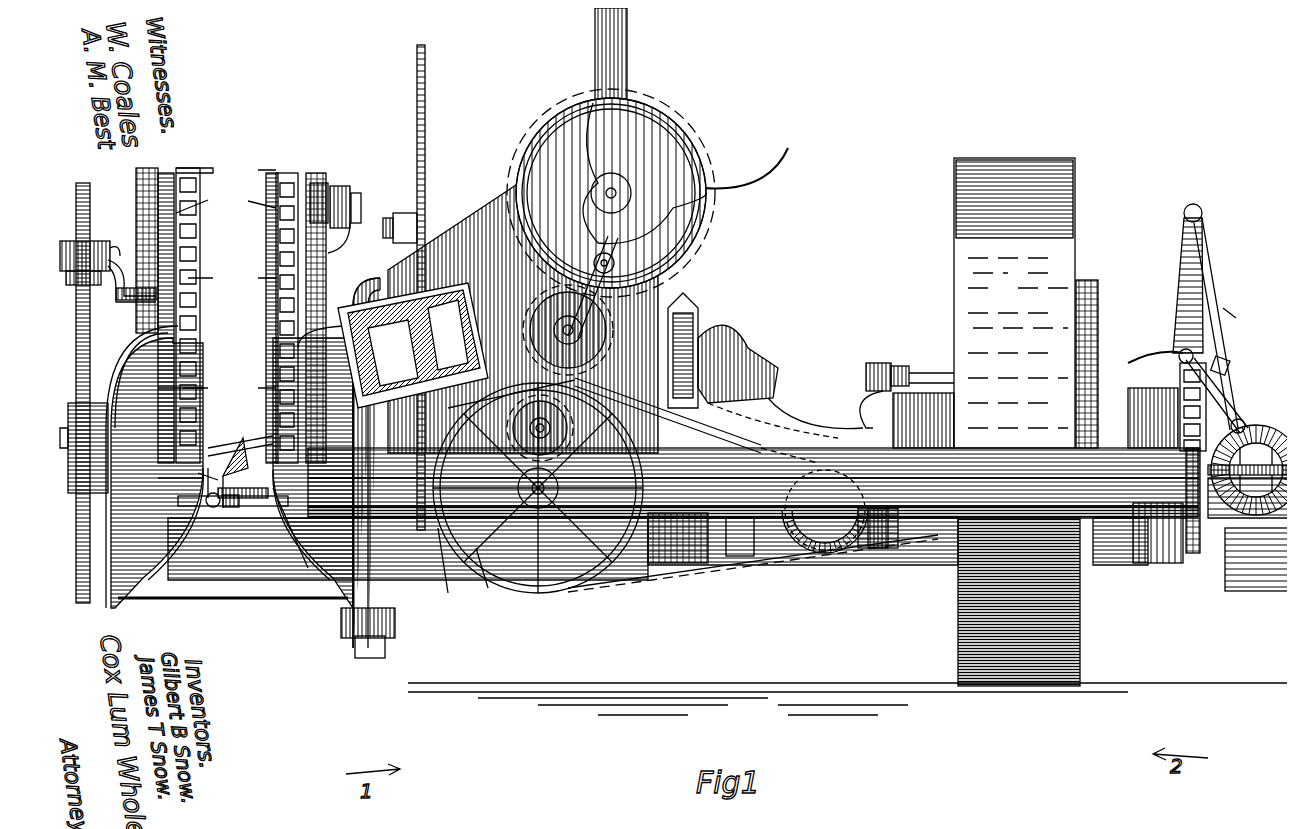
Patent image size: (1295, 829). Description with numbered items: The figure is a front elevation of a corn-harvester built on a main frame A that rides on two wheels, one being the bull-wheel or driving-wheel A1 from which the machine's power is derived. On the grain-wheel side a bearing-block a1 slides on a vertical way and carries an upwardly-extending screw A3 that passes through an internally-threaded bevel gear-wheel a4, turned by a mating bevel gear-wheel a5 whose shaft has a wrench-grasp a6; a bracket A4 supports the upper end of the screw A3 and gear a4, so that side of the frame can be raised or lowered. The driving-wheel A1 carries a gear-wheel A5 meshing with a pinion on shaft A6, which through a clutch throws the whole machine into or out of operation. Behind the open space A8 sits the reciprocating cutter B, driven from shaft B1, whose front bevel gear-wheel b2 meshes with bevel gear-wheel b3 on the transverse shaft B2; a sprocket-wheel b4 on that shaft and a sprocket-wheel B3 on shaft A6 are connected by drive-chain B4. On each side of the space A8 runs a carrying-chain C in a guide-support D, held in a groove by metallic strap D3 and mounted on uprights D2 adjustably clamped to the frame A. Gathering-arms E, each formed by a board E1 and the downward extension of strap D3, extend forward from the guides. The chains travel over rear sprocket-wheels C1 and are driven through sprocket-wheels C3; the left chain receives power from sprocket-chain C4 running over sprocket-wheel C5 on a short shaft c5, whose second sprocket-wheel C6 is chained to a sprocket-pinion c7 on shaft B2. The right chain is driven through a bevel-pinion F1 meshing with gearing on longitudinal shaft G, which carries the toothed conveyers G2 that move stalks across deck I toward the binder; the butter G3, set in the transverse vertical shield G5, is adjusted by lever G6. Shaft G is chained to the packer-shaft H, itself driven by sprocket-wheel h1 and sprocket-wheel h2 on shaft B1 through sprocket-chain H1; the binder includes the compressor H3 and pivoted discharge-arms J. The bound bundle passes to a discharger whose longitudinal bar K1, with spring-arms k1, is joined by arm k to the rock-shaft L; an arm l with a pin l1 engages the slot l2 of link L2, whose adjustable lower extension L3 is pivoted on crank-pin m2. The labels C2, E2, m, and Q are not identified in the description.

The main frame A is at (753, 483).
The bull-wheel A1 is at (1014, 303).
The screw A3 is at (90, 376).
The bracket A4 is at (85, 256).
The gear-wheel A5 is at (1080, 272).
The shaft A6 is at (1256, 550).
The open space A8 is at (243, 550).
The bearing-block a1 is at (72, 485).
The internally-threaded bevel gear-wheel a4 is at (114, 235).
The bevel gear-wheel a5 is at (102, 260).
The wrench-grasp a6 is at (108, 290).
The cutter B is at (230, 498).
The shaft B1 is at (115, 580).
The transverse shaft B2 is at (448, 573).
The sprocket-wheel B3 is at (1198, 360).
The drive-chain B4 is at (1185, 545).
The bevel gear-wheel b2 is at (810, 540).
The bevel gear-wheel b3 is at (866, 540).
The sprocket-wheel b4 is at (1183, 545).
The carrying-chain C is at (248, 215).
The rear sprocket-wheel C1 is at (220, 410).
The arms C2 is at (215, 285).
The sprocket-wheel C3 is at (136, 160).
The sprocket-chain C4 is at (312, 175).
The sprocket-wheel C5 is at (354, 212).
The short shaft c5 is at (364, 208).
The sprocket-wheel C6 is at (300, 160).
The sprocket-pinion c7 is at (290, 542).
The guide-support D is at (270, 140).
The uprights D2 is at (380, 255).
The metallic strap D3 is at (260, 330).
The gathering-arm E is at (140, 580).
The board E1 is at (110, 505).
The foot E2 is at (387, 612).
The bevel-pinion F1 is at (186, 496).
The longitudinal shaft G is at (200, 500).
The toothed conveyers G2 is at (241, 440).
The butter G3 is at (413, 345).
The transverse vertical shield G5 is at (470, 200).
The lever G6 is at (417, 160).
The packer-shaft H is at (560, 560).
The sprocket-chain H1 is at (700, 540).
The compressor H3 is at (735, 345).
The sprocket-wheel h1 is at (487, 586).
The sprocket-wheel h2 is at (730, 545).
The deck I is at (220, 442).
The discharge-arms J is at (749, 173).
The longitudinal bar K1 is at (868, 355).
The arm k is at (925, 365).
The spring-arms k1 is at (800, 400).
The rock-shaft L is at (1160, 345).
The link L2 is at (1228, 220).
The lower extension L3 is at (1230, 360).
The arm l is at (1168, 265).
The pin l1 is at (1193, 202).
The slot l2 is at (1237, 288).
The wheel m is at (1253, 490).
The crank-pin m2 is at (1237, 418).
The block Q is at (1220, 360).